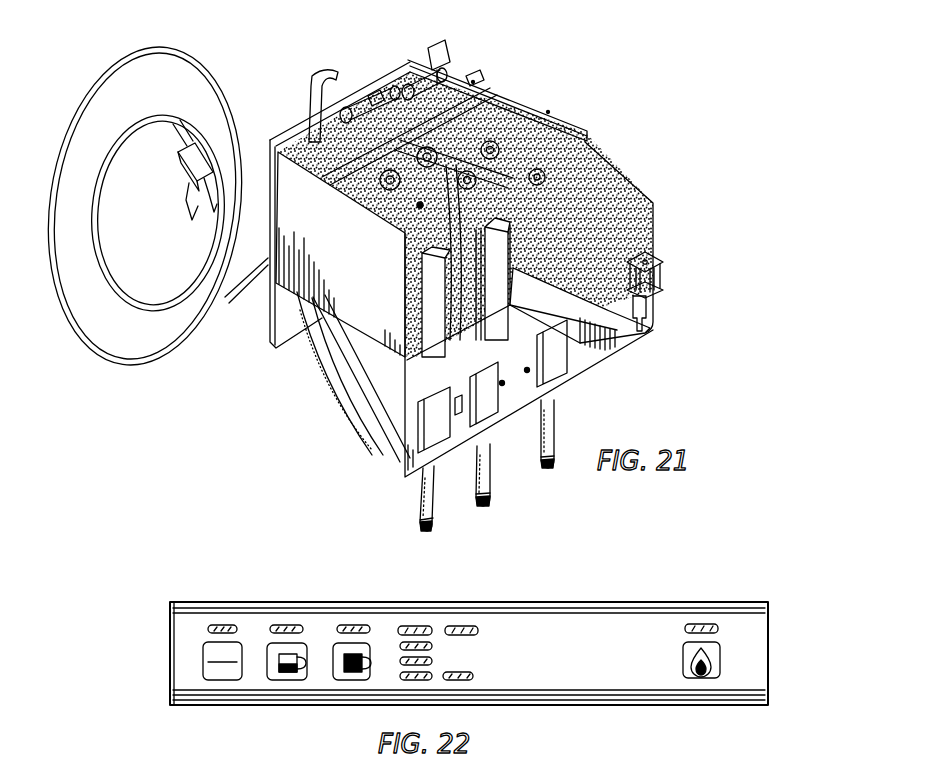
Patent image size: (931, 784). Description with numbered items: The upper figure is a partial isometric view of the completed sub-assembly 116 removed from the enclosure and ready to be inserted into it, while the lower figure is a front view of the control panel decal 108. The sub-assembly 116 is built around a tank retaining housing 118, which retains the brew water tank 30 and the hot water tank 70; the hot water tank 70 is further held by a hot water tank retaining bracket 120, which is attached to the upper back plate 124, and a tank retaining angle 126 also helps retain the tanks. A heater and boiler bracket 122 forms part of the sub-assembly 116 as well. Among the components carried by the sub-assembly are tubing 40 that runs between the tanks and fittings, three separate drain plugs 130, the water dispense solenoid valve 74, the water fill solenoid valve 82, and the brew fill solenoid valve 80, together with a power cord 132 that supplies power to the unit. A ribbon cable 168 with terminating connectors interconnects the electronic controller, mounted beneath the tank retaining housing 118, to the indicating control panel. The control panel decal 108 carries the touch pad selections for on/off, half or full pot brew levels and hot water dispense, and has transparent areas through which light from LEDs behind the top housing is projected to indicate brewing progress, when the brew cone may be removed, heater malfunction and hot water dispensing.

In FIG. 21, the brew water tank 30 is at (300, 150).
In FIG. 21, the tubing 40 is at (645, 322).
In FIG. 21, the hot water tank 70 is at (607, 173).
In FIG. 21, the water dispense solenoid valve 74 is at (657, 258).
In FIG. 21, the brew fill solenoid valve 80 is at (373, 87).
In FIG. 21, the water fill solenoid valve 82 is at (442, 38).
In FIG. 22, the control panel decal 108 is at (633, 600).
In FIG. 21, the sub-assembly 116 is at (547, 107).
In FIG. 21, the tank retaining housing 118 is at (272, 168).
In FIG. 21, the hot water tank retaining bracket 120 is at (653, 312).
In FIG. 21, the heater and boiler bracket 122 is at (578, 388).
In FIG. 21, the upper back plate 124 is at (458, 50).
In FIG. 21, the tank retaining angle 126 is at (475, 82).
In FIG. 21, the drain plug 130 is at (423, 530).
In FIG. 21, the power cord 132 is at (148, 365).
In FIG. 21, the ribbon cable 168 is at (340, 22).